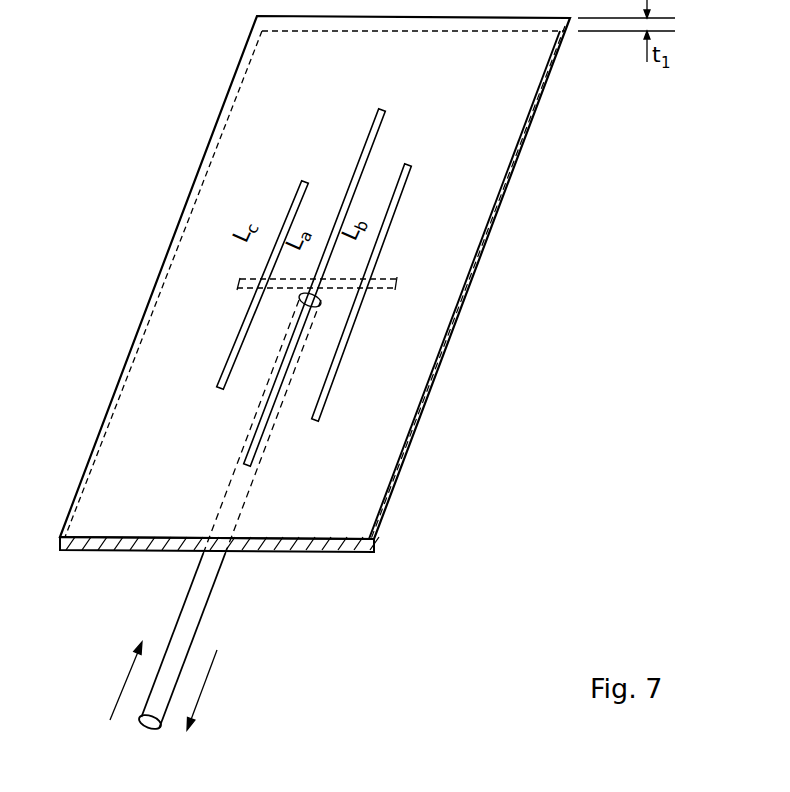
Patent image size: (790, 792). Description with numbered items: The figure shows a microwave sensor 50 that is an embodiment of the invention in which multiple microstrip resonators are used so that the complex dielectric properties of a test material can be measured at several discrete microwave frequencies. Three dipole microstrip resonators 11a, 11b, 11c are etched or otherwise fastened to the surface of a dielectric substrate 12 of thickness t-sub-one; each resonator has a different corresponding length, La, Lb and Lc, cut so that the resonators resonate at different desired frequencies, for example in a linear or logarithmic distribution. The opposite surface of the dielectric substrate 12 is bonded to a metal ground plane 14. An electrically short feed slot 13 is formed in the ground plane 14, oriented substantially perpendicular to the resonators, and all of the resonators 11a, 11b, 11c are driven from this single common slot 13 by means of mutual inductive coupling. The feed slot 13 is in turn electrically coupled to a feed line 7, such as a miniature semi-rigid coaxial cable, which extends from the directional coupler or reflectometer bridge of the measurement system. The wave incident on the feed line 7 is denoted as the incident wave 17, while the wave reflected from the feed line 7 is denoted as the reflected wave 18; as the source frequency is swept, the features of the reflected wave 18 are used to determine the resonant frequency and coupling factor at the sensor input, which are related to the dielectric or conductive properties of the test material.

The feed line 7 is at (217, 587).
The microstrip resonator 11a is at (372, 110).
The microstrip resonator 11b is at (235, 223).
The microstrip resonator 11c is at (300, 188).
The dielectric substrate 12 is at (473, 173).
The feed slot 13 is at (459, 267).
The ground plane 14 is at (462, 328).
The incident wave 17 is at (110, 681).
The reflected wave 18 is at (213, 690).
The sensor 50 is at (410, 484).